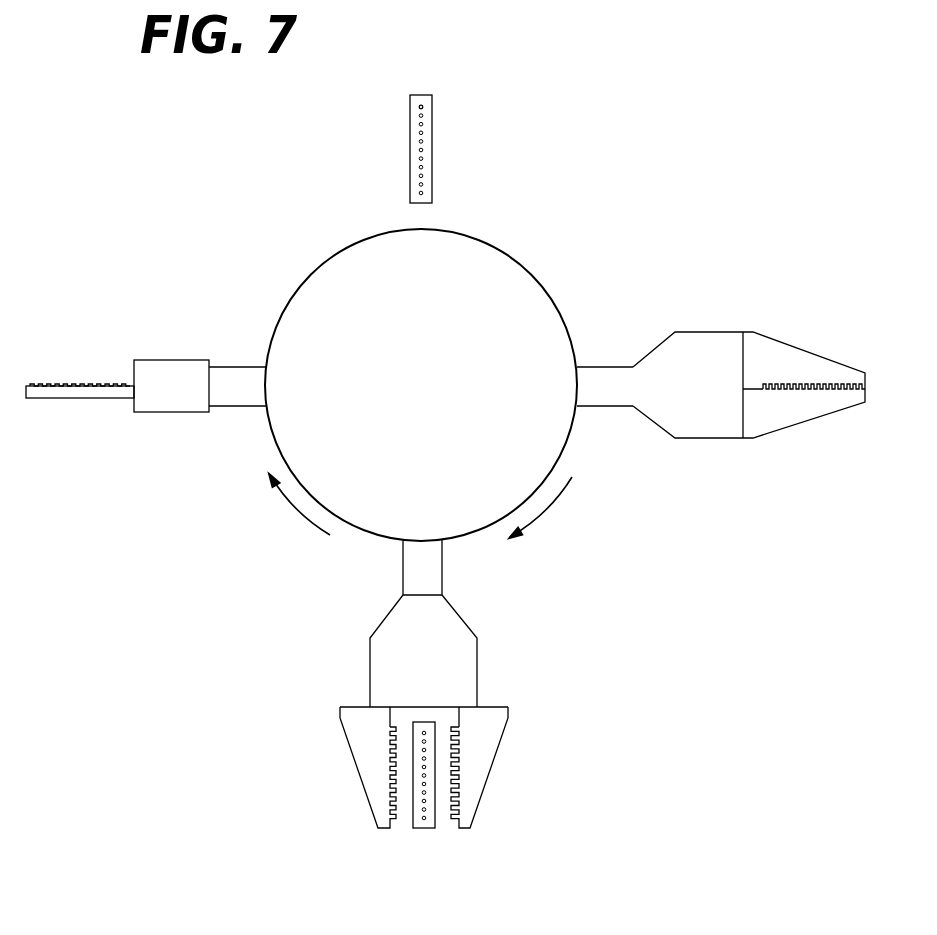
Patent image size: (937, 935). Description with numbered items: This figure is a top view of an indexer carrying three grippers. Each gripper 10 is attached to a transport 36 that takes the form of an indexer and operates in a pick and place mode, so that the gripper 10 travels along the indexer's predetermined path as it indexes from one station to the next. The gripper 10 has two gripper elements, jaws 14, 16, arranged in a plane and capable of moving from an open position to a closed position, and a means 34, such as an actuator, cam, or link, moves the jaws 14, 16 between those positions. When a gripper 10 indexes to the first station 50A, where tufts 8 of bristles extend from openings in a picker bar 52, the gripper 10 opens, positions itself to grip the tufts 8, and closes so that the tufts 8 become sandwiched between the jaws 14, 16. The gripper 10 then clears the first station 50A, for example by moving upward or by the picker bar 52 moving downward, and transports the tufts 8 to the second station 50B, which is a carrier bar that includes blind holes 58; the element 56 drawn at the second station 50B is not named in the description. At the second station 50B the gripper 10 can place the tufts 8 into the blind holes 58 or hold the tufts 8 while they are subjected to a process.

The tufts 8 is at (42, 385).
The gripper 10 is at (117, 343).
The jaw 14 is at (353, 762).
The jaw 16 is at (490, 777).
The means 34 is at (468, 667).
The transport 36 is at (500, 267).
The first station 50A is at (352, 675).
The second station 50B is at (445, 68).
The picker bar 52 is at (418, 822).
The staple 56 is at (425, 146).
The blind holes 58 is at (421, 107).